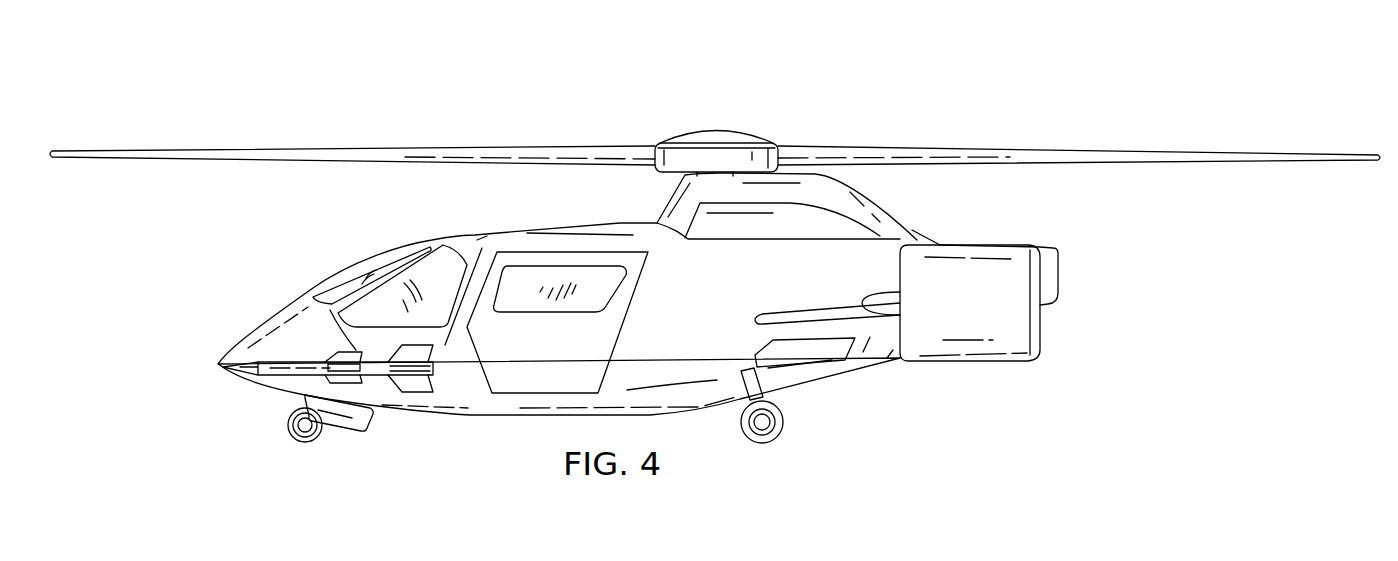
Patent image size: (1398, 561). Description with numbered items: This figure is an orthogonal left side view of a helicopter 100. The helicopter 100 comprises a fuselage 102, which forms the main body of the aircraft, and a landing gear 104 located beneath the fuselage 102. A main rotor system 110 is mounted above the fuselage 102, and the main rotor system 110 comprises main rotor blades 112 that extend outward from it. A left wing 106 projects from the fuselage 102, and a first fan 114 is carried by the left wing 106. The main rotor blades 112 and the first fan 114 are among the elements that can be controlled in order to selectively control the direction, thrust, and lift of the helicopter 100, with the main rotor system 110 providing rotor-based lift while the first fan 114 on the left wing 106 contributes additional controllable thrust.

The helicopter 100 is at (1057, 70).
The fuselage 102 is at (456, 421).
The landing gear 104 is at (777, 444).
The left wing 106 is at (818, 309).
The main rotor system 110 is at (741, 124).
The main rotor blades 112 is at (381, 147).
The first fan 114 is at (998, 362).